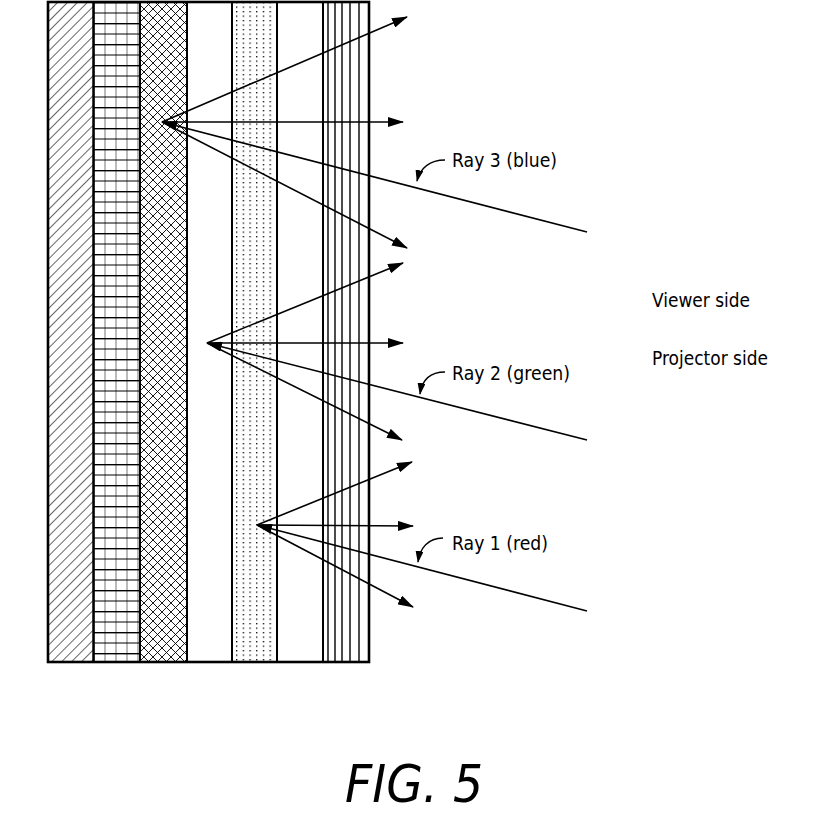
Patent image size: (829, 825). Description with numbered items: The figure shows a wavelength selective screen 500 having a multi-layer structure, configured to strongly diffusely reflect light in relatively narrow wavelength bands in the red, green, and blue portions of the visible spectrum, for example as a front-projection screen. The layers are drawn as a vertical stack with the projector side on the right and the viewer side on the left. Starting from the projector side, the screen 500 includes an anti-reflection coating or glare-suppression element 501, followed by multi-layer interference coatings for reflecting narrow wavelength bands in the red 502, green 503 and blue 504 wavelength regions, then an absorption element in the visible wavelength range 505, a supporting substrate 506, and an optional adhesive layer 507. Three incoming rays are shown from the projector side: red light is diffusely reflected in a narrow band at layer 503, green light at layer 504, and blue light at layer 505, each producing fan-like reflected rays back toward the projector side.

The wavelength selective screen 500 is at (542, 108).
The anti-reflection coating or glare-suppression element 501 is at (348, 633).
The multi-layer interference coating for red wavelength region 502 is at (292, 633).
The multi-layer interference coating for green wavelength region 503 is at (260, 633).
The multi-layer interference coating for blue wavelength region 504 is at (200, 633).
The absorption element in the visible wavelength range 505 is at (165, 633).
The supporting substrate 506 is at (110, 633).
The adhesive layer 507 is at (75, 633).